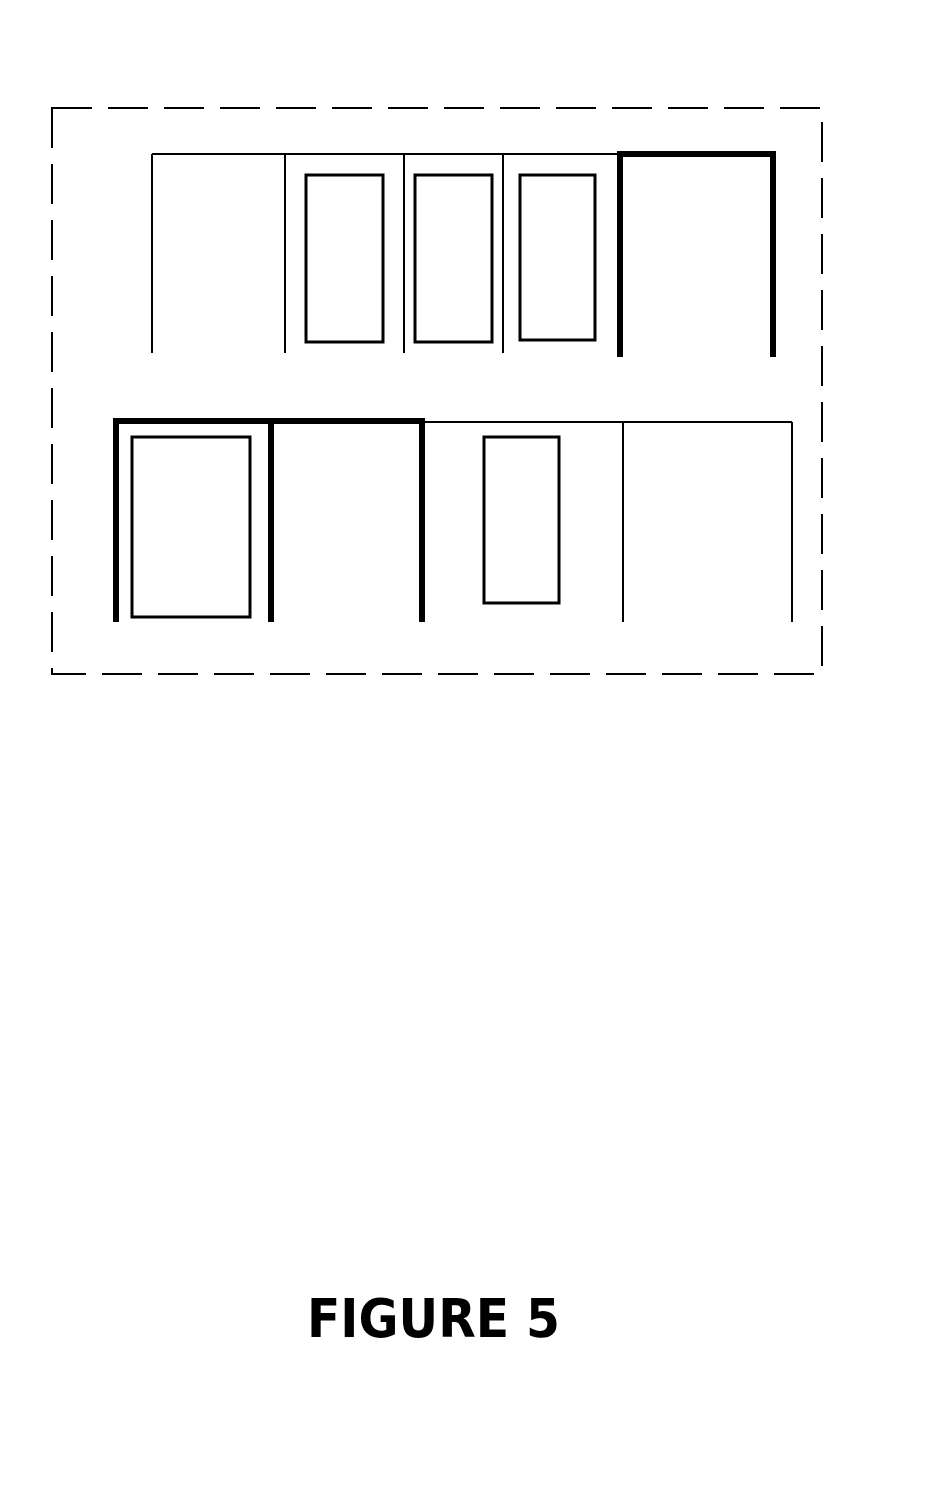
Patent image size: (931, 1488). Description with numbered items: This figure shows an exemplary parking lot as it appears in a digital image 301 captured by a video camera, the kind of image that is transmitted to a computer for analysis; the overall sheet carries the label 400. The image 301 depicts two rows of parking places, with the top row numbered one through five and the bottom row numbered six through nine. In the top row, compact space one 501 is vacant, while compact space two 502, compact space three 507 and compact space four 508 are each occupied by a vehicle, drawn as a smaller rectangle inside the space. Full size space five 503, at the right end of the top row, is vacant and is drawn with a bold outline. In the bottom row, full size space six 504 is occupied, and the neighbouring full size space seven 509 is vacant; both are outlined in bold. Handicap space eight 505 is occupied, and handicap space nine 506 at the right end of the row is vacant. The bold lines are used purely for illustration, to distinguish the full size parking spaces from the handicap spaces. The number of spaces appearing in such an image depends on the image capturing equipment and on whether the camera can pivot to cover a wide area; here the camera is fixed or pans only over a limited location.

The parking lot display map 400 is at (73, 29).
The digital image 301 is at (110, 141).
The compact space one 501 is at (200, 281).
The compact space two 502 is at (324, 282).
The compact space three 507 is at (434, 282).
The compact space four 508 is at (538, 282).
The full size space five 503 is at (676, 283).
The full size space six 504 is at (171, 551).
The full size space seven 509 is at (326, 548).
The handicap space eight 505 is at (502, 545).
The handicap space nine 506 is at (689, 545).